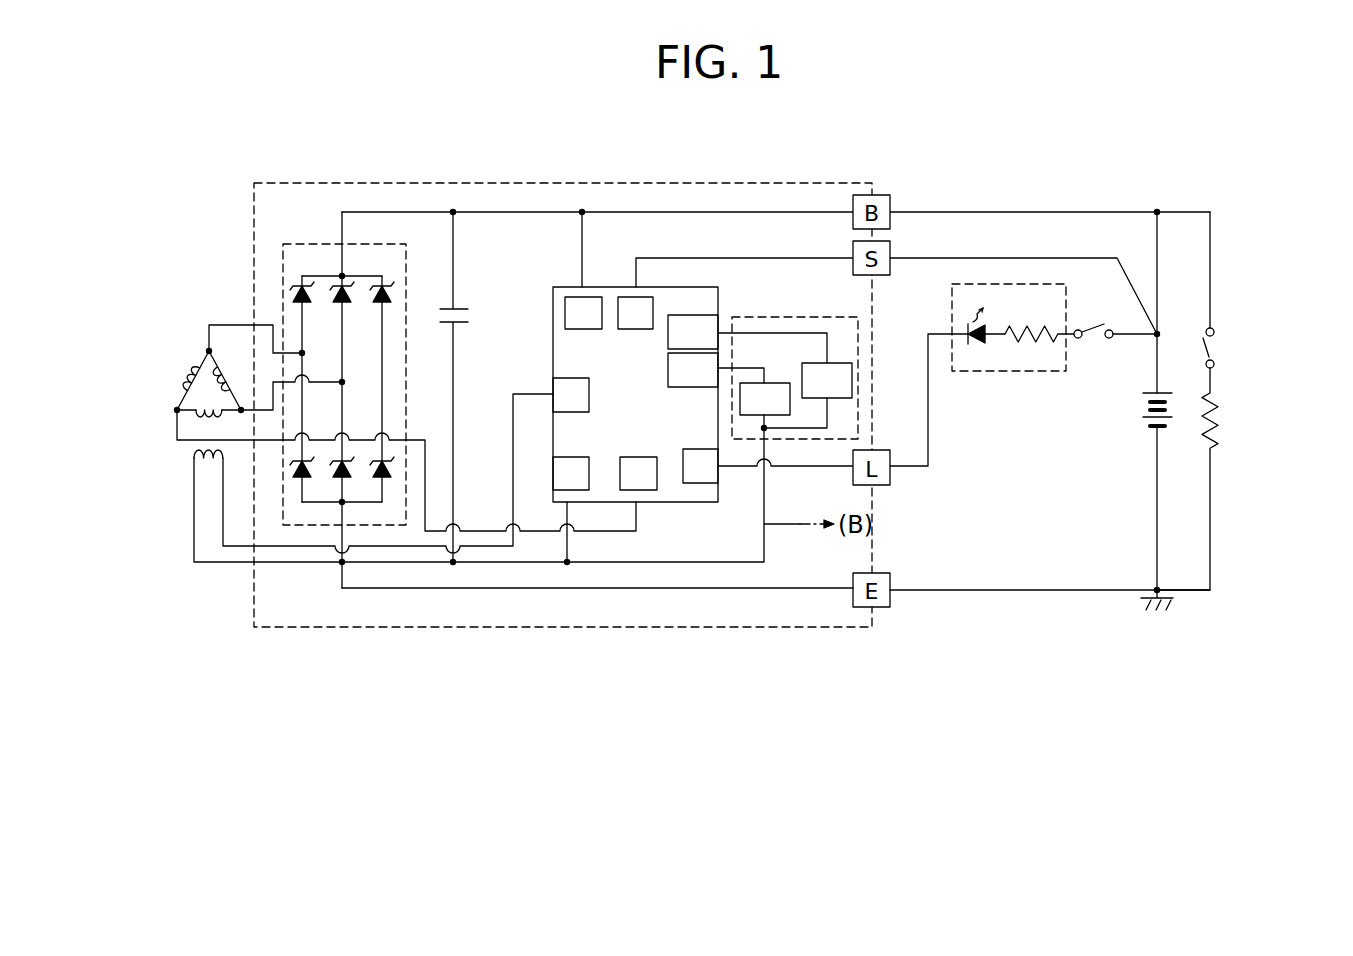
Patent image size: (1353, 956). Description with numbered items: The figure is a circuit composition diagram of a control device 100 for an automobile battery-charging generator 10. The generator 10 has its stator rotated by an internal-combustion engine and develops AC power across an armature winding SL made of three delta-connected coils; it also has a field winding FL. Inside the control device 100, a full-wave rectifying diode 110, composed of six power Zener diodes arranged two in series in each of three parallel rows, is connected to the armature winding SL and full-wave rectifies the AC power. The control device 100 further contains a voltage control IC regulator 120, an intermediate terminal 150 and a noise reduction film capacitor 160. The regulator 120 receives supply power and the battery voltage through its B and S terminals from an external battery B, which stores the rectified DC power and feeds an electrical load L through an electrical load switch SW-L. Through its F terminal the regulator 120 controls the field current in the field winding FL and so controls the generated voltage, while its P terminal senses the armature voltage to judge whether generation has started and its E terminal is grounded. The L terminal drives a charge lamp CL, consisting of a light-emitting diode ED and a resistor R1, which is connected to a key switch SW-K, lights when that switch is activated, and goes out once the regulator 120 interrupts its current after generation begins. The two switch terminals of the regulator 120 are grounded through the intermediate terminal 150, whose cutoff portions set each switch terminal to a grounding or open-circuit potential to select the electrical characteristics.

The automobile battery-charging generator 10 is at (160, 413).
The armature winding SL is at (190, 376).
The field winding FL is at (173, 464).
The control device 100 is at (774, 182).
The full-wave rectifying diode 110 is at (306, 243).
The voltage control IC regulator 120 is at (568, 286).
The intermediate terminal 150 is at (787, 316).
The noise reduction film capacitor 160 is at (471, 319).
The charge lamp CL is at (1012, 371).
The light-emitting diode ED is at (968, 348).
The resistor R1 is at (1036, 348).
The key switch SW-K is at (1093, 340).
The battery B is at (1144, 418).
The electrical load switch SW-L is at (1216, 346).
The electrical load L is at (1218, 412).